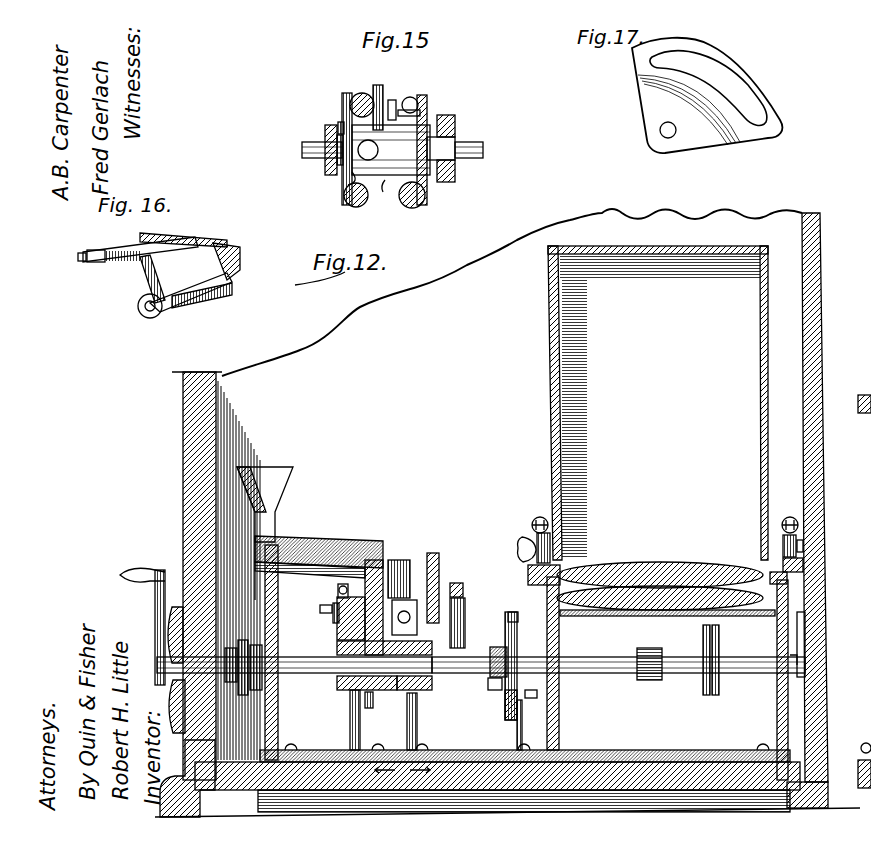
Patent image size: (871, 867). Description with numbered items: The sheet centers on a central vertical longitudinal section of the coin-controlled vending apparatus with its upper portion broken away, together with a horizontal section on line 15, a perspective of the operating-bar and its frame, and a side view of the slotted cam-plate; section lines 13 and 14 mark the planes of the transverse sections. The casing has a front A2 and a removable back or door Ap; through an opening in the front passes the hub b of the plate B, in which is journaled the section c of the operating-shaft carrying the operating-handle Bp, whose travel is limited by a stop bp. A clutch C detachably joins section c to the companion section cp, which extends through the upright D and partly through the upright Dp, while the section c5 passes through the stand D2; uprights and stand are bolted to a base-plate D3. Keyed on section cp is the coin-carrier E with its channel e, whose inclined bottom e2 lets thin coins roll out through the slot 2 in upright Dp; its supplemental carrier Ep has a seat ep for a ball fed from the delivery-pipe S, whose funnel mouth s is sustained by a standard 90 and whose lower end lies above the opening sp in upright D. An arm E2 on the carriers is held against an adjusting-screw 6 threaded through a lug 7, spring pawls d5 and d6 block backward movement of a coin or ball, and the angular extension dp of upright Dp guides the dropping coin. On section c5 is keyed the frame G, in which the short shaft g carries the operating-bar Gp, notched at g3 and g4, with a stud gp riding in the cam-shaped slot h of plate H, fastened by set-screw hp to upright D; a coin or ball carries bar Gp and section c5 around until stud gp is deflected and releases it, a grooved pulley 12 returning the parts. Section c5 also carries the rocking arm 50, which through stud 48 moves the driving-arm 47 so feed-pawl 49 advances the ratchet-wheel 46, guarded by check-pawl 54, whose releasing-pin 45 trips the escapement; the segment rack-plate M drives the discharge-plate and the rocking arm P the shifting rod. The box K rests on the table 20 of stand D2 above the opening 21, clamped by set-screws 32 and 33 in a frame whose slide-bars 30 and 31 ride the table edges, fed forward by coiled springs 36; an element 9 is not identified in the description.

In FIG. 12, the front of the casing A2 is at (185, 418).
In FIG. 12, the removable back or door Ap is at (828, 452).
In FIG. 12, the operating-handle Bp is at (158, 600).
In FIG. 12, the stop bp is at (156, 626).
In FIG. 12, the plate B is at (174, 718).
In FIG. 12, the hub b is at (231, 653).
In FIG. 12, the clutch C is at (246, 658).
In FIG. 12, the section of the operating-shaft c is at (252, 692).
In FIG. 12, the companion section of the operating-shaft cp is at (322, 656).
In FIG. 15, the companion section of the operating-shaft cp is at (302, 146).
In FIG. 12, the section of the operating-shaft c5 is at (618, 656).
In FIG. 15, the section of the operating-shaft c5 is at (484, 148).
In FIG. 16, the section of the operating-shaft c5 is at (216, 298).
In FIG. 12, the funnel-shaped mouth s is at (265, 504).
In FIG. 12, the delivery-pipe S is at (328, 536).
In FIG. 12, the section line 13 is at (385, 530).
In FIG. 12, the section line 14 is at (416, 551).
In FIG. 12, the opening sp is at (374, 607).
In FIG. 12, the angular extension dp is at (401, 579).
In FIG. 12, the set-screw hp is at (340, 588).
In FIG. 12, the seat ep is at (333, 606).
In FIG. 15, the seat ep is at (338, 126).
In FIG. 12, the section line 15 is at (320, 606).
In FIG. 12, the supplemental carrier or extension Ep is at (336, 626).
In FIG. 15, the supplemental carrier or extension Ep is at (355, 178).
In FIG. 12, the coin-carrier E is at (410, 680).
In FIG. 15, the coin-carrier E is at (398, 175).
In FIG. 15, the arm E2 is at (378, 88).
In FIG. 12, the plate H is at (355, 686).
In FIG. 15, the plate H is at (326, 165).
In FIG. 17, the plate H is at (707, 95).
In FIG. 12, the standard 90 is at (270, 690).
In FIG. 12, the upright D is at (350, 720).
In FIG. 15, the upright D is at (345, 110).
In FIG. 12, the inclined bottom of the channel e2 is at (377, 699).
In FIG. 12, the upright Dp is at (414, 721).
In FIG. 15, the upright Dp is at (427, 110).
In FIG. 12, the channel e is at (404, 617).
In FIG. 15, the channel e is at (382, 191).
In FIG. 12, the slot 2 is at (455, 598).
In FIG. 12, the bolt head 9 is at (465, 590).
In FIG. 12, the slide-bar 31 is at (530, 582).
In FIG. 12, the feed-pawl 49 is at (516, 614).
In FIG. 12, the ratchet-wheel 46 is at (518, 630).
In FIG. 12, the driving-arm 47 is at (506, 705).
In FIG. 12, the stud 48 is at (494, 647).
In FIG. 12, the rocking arm 50 is at (496, 680).
In FIG. 12, the releasing-pin 45 is at (532, 698).
In FIG. 12, the check-pawl 54 is at (517, 733).
In FIG. 12, the set-screw 33 is at (520, 545).
In FIG. 12, the coiled springs 36 is at (539, 517).
In FIG. 12, the opening 21 is at (590, 566).
In FIG. 12, the box K is at (658, 403).
In FIG. 12, the set-screw 32 is at (806, 546).
In FIG. 12, the slide-bar 30 is at (805, 562).
In FIG. 12, the table 20 is at (790, 578).
In FIG. 12, the rocking arm P is at (806, 625).
In FIG. 12, the segment rack-plate M is at (650, 648).
In FIG. 12, the grooved pulley 12 is at (704, 690).
In FIG. 12, the stand D2 is at (560, 702).
In FIG. 12, the base-plate D3 is at (624, 755).
In FIG. 15, the spring pawl or check d6 is at (346, 185).
In FIG. 15, the spring pawl or check d5 is at (413, 208).
In FIG. 15, the adjusting-screw 6 is at (391, 102).
In FIG. 15, the screw-threaded lug 7 is at (409, 102).
In FIG. 15, the frame G is at (456, 122).
In FIG. 16, the frame G is at (200, 277).
In FIG. 16, the notch g4 is at (113, 252).
In FIG. 16, the friction roll or stud gp is at (78, 258).
In FIG. 16, the operating-bar Gp is at (110, 265).
In FIG. 16, the notch g3 is at (146, 270).
In FIG. 16, the short shaft g is at (183, 239).
In FIG. 17, the cam-shaped slot h is at (722, 76).